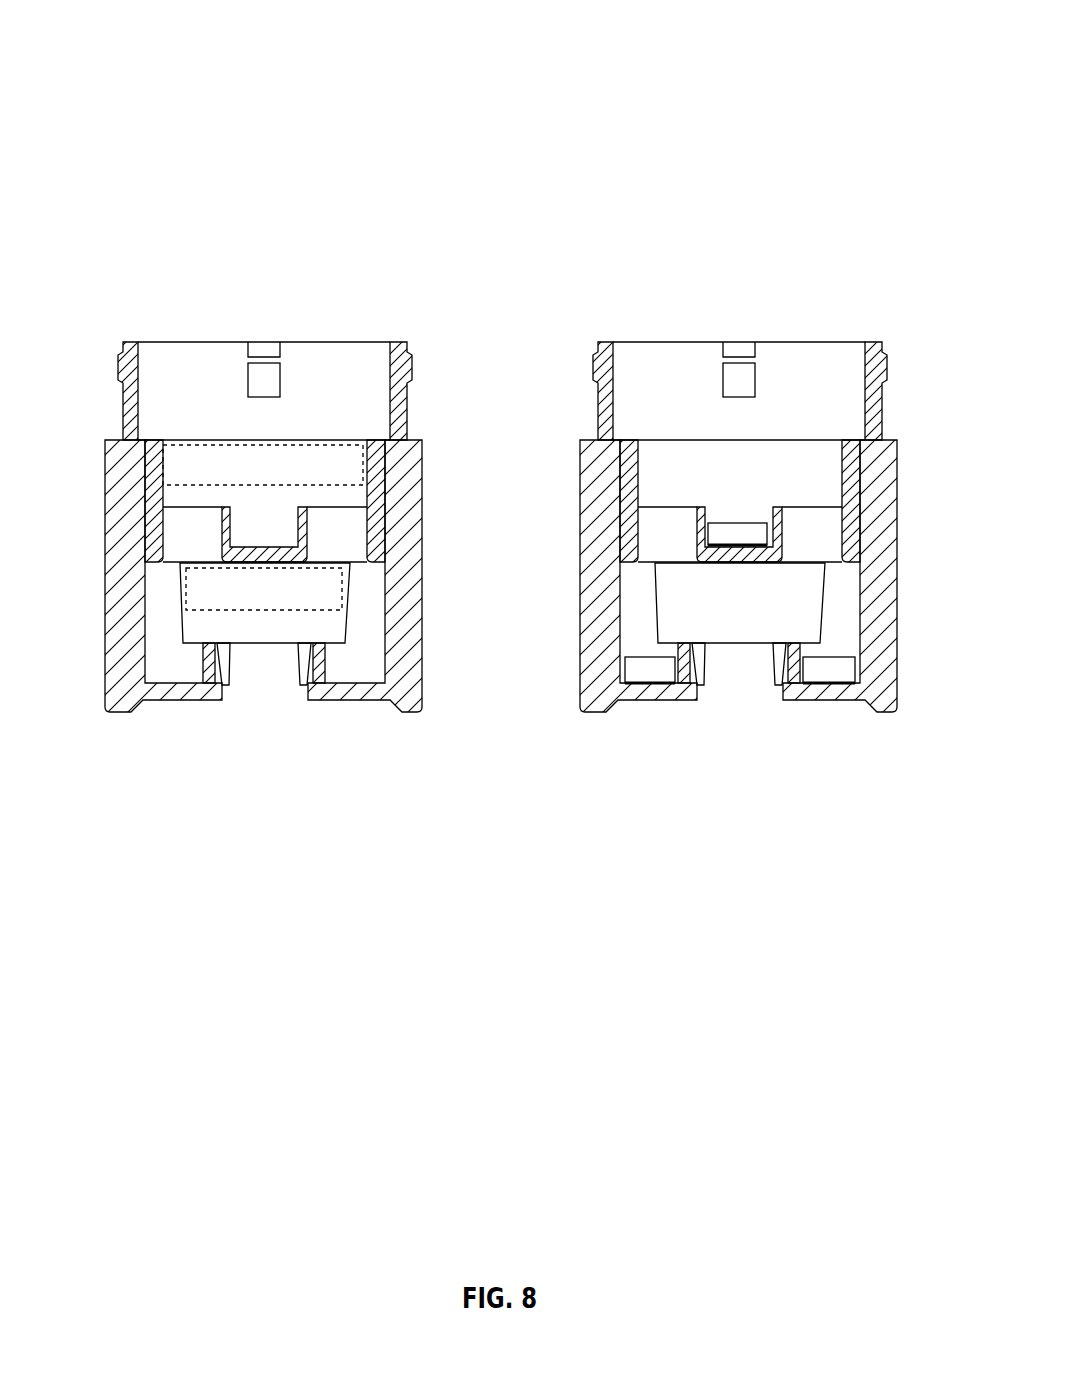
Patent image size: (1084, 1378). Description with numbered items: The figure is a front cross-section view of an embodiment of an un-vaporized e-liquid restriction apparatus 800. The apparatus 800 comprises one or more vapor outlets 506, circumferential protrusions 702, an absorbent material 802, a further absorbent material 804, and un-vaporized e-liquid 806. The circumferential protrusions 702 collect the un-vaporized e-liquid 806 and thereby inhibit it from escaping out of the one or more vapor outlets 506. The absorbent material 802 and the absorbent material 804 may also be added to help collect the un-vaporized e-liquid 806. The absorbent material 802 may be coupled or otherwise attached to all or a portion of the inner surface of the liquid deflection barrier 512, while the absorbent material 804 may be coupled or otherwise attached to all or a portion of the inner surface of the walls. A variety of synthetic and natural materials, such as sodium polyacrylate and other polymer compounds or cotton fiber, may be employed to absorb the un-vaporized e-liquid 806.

The un-vaporized e-liquid restriction apparatus 800 is at (877, 74).
The liquid deflection barrier 512 is at (145, 455).
The vapor outlets 506 is at (757, 695).
The circumferential protrusions 702 is at (685, 647).
The absorbent material 802 is at (281, 480).
The absorbent material 804 is at (279, 603).
The un-vaporized e-liquid 806 is at (803, 660).